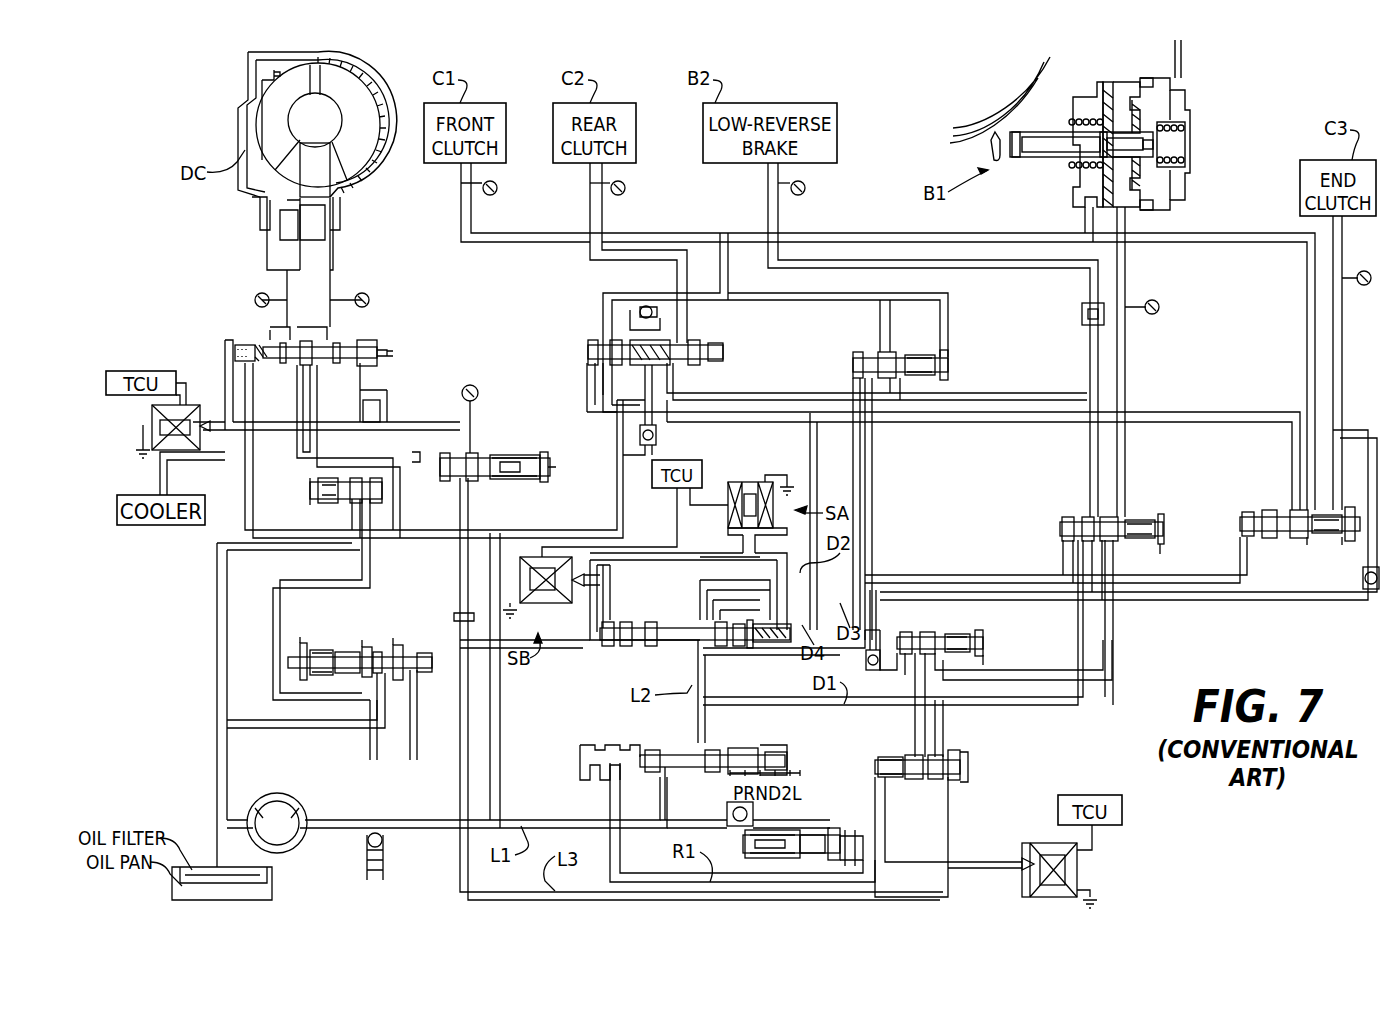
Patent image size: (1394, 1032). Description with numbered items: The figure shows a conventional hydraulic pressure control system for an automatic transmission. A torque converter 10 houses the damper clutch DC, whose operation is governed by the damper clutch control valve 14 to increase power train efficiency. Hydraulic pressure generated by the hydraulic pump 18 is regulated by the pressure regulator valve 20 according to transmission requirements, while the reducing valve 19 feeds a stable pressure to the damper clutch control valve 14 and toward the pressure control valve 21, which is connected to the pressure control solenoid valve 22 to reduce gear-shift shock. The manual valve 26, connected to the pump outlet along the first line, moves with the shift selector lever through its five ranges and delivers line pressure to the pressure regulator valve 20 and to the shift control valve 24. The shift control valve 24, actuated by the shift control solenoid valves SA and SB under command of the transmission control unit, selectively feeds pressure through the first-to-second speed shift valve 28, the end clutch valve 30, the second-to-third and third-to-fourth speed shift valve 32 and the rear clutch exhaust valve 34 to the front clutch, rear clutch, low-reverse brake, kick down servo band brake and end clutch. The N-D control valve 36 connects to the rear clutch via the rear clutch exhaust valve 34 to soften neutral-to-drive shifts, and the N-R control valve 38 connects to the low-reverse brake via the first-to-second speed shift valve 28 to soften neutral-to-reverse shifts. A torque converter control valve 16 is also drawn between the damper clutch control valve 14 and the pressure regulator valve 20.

The torque converter 10 is at (220, 128).
The damper clutch control valve 14 is at (389, 328).
The torque converter control valve 16 is at (390, 490).
The hydraulic pump 18 is at (296, 860).
The reducing valve 19 is at (522, 450).
The pressure regulator valve 20 is at (283, 660).
The pressure control valve 21 is at (983, 773).
The pressure control solenoid valve 22 is at (1038, 840).
The shift control valve 24 is at (774, 653).
The manual valve 26 is at (570, 760).
The first-to-second speed shift valve 28 is at (1055, 532).
The end clutch valve 30 is at (1263, 507).
The second-to-third and third-to-fourth speed shift valve 32 is at (845, 369).
The rear clutch exhaust valve 34 is at (735, 356).
The N-D control valve 36 is at (995, 651).
The N-R control valve 38 is at (838, 828).